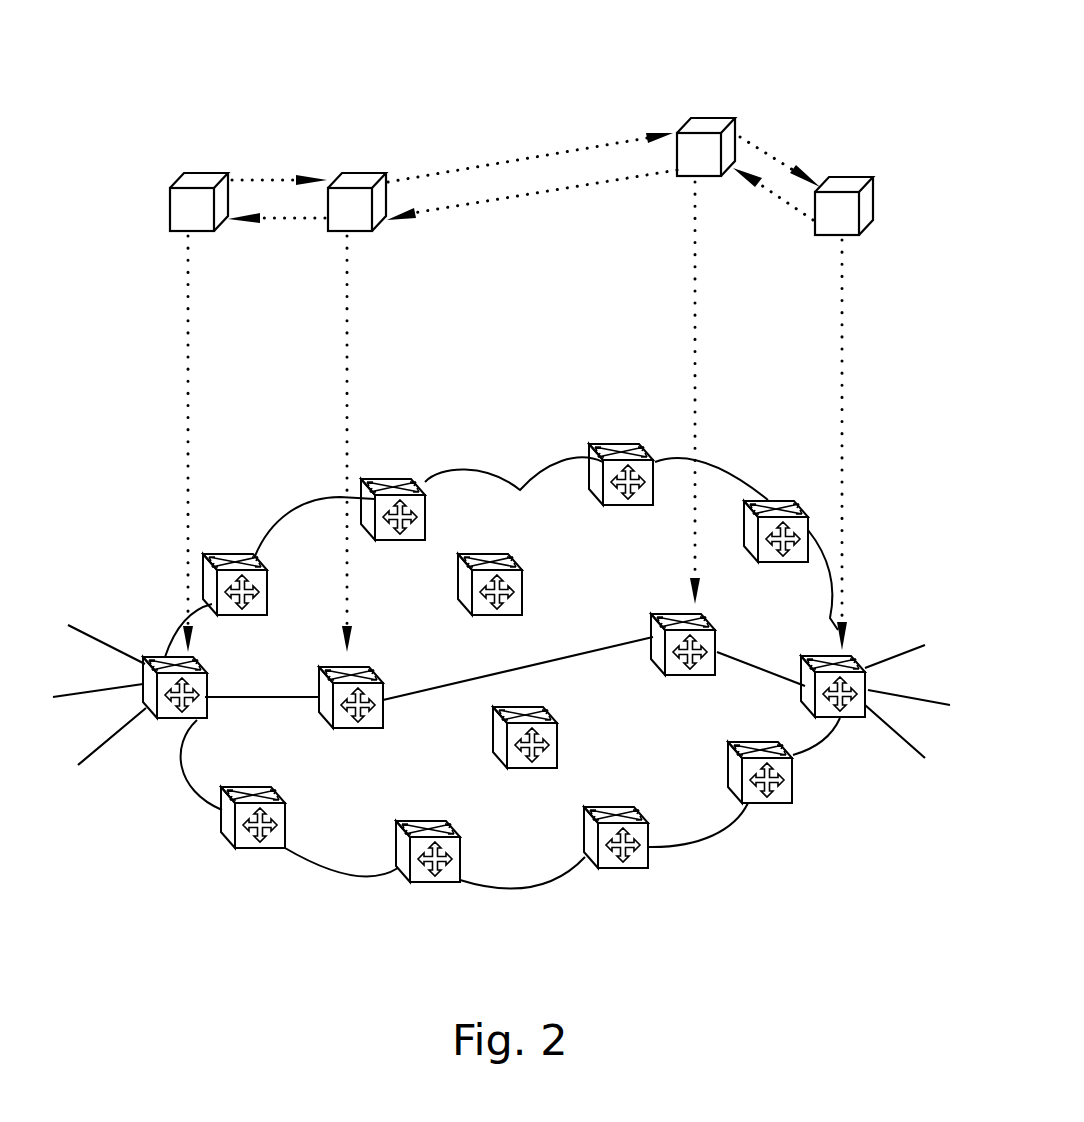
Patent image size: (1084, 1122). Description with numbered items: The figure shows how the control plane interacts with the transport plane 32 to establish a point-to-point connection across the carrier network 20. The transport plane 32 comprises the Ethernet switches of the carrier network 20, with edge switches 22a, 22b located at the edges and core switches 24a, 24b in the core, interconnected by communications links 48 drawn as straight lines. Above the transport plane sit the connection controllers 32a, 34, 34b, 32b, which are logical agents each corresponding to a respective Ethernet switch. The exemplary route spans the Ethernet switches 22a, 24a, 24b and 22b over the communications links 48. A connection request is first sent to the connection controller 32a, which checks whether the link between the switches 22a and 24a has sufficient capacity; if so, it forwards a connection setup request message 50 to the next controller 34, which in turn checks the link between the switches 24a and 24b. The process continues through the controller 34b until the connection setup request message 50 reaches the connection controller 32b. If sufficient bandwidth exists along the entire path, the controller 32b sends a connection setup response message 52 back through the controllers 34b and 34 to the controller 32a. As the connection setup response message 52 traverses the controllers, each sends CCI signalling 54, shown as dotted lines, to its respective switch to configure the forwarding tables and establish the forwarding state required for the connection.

The carrier network cloud 20 is at (718, 835).
The Ethernet switch 22a is at (205, 708).
The Ethernet switch 22b is at (808, 706).
The Ethernet switch 24a is at (372, 730).
The Ethernet switch 24b is at (660, 667).
The transport plane 32 is at (156, 583).
The connection controller 32a is at (197, 176).
The connection controller 32b is at (847, 183).
The connection controller 34 is at (357, 178).
The connection controller 34b is at (706, 120).
The communications links 48 is at (258, 697).
The connection setup request message 50 is at (283, 178).
The connection setup response message 52 is at (283, 222).
The CCI signalling 54 is at (190, 390).